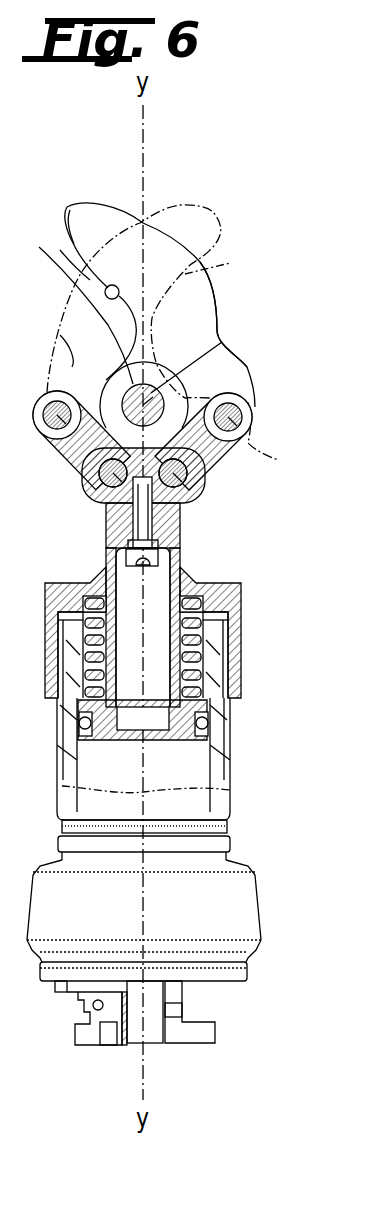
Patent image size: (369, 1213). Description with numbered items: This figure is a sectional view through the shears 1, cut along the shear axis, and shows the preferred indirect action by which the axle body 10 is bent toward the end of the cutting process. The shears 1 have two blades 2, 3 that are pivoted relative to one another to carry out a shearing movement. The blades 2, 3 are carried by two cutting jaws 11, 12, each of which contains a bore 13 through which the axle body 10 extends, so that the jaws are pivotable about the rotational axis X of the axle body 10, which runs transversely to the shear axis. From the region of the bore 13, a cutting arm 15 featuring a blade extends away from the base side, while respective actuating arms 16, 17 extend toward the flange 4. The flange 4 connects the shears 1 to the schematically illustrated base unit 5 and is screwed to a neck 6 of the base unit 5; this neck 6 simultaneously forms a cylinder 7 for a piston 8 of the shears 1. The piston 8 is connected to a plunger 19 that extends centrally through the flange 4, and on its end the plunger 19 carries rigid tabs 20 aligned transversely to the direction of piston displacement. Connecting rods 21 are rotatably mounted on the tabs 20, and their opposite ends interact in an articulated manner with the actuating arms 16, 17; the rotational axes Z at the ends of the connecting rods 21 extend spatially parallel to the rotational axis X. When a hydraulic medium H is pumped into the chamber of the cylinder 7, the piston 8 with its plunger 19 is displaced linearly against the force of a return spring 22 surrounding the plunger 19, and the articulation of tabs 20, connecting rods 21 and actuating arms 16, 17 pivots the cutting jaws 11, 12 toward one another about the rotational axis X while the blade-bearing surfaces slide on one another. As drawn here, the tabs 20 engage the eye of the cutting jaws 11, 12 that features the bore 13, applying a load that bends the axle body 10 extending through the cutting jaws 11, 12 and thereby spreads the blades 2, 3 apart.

The shears 1 is at (195, 175).
The blade 2 is at (119, 285).
The blade 3 is at (230, 263).
The flange 4 is at (228, 665).
The base unit 5 is at (70, 1000).
The neck 6 is at (215, 744).
The cylinder 7 is at (75, 745).
The piston 8 is at (85, 726).
The axle body 10 is at (222, 341).
The cutting jaw 11 is at (212, 318).
The cutting jaw 12 is at (76, 326).
The bore 13 is at (68, 303).
The cutting arm 15 is at (190, 217).
The actuating arm 16 is at (230, 378).
The actuating arm 17 is at (72, 367).
The plunger 19 is at (178, 553).
The tab 20 is at (85, 503).
The connecting rod 21 is at (55, 466).
The return spring 22 is at (88, 600).
The rotational axis Z is at (36, 404).
The rotational axis X is at (250, 401).
The hydraulic medium H is at (153, 773).